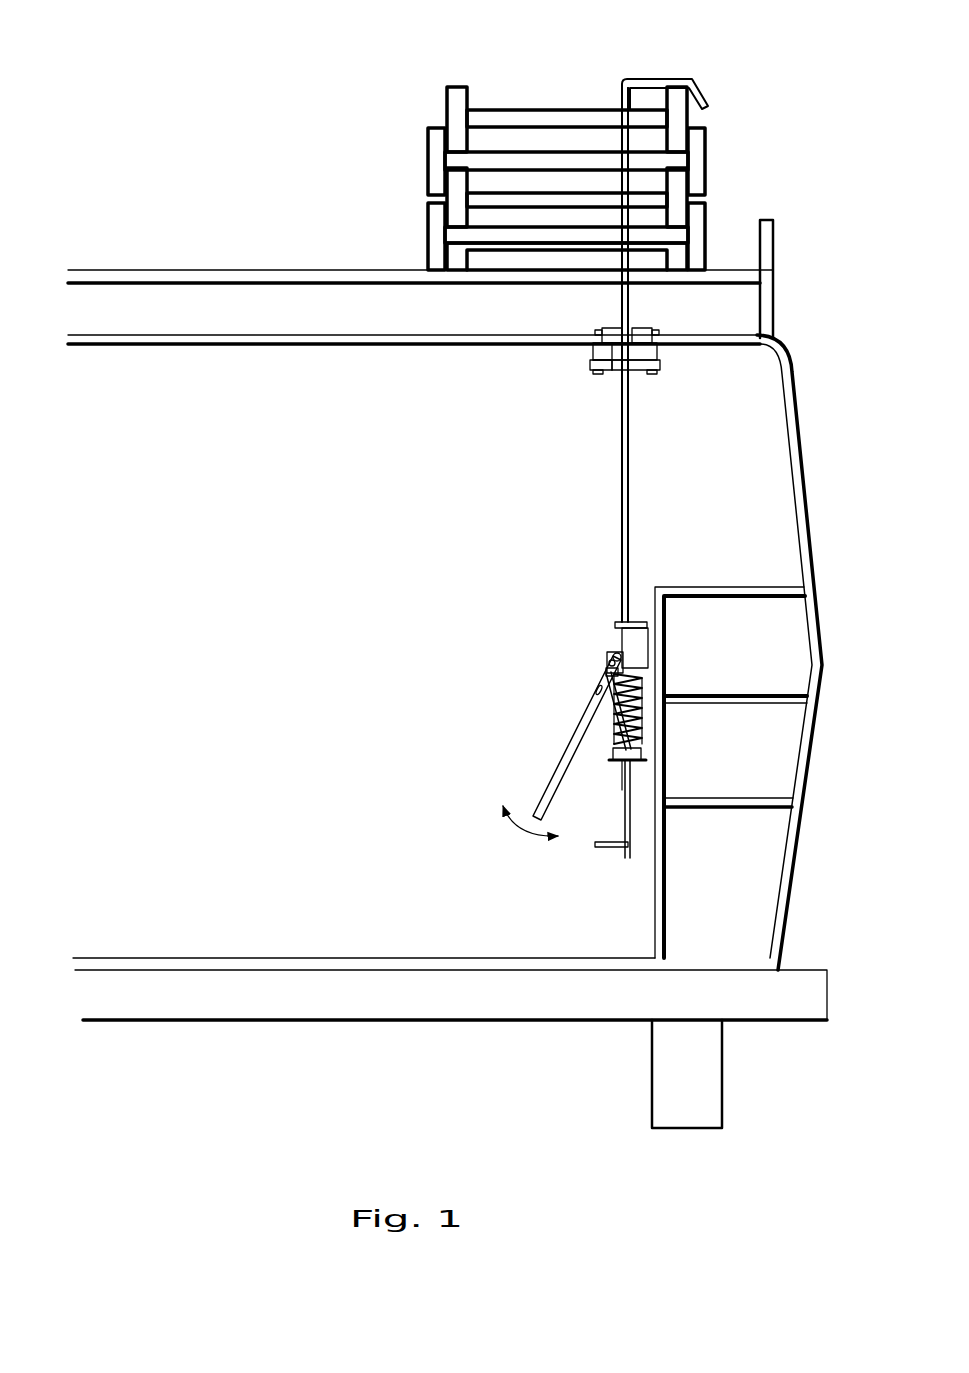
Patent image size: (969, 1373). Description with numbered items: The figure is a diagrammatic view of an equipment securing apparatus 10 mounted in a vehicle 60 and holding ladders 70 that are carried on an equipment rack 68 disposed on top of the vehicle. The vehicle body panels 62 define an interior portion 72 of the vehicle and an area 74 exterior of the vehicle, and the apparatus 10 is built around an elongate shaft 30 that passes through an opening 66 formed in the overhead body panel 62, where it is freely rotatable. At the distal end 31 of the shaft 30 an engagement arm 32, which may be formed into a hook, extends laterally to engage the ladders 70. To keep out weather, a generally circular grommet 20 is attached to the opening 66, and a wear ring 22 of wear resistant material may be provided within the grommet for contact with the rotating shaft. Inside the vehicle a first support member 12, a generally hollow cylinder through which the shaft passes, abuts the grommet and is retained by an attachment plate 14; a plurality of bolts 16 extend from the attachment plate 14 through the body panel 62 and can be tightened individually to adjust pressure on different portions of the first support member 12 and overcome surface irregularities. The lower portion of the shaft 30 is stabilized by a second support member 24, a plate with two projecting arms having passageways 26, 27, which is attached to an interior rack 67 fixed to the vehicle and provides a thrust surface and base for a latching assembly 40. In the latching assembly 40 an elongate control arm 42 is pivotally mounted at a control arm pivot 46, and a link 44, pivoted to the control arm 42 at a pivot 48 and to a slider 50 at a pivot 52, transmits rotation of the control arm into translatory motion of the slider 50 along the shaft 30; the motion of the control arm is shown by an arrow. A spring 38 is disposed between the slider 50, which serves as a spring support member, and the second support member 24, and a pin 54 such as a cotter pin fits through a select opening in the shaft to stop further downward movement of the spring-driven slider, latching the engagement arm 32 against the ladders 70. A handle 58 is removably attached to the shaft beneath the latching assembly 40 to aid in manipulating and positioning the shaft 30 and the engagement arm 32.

The equipment securing apparatus 10 is at (386, 590).
The first support member 12 is at (632, 372).
The attachment plate 14 is at (615, 375).
The bolts 16 is at (594, 375).
The grommet 20 is at (637, 332).
The wear ring 22 is at (622, 335).
The second support member 24 is at (642, 628).
The passageway 26 is at (620, 650).
The passageway 27 is at (614, 652).
The elongate shaft 30 is at (626, 542).
The distal end 31 is at (620, 97).
The engagement arm 32 is at (653, 80).
The spring 38 is at (640, 700).
The latching assembly 40 is at (460, 743).
The control arm 42 is at (555, 780).
The link 44 is at (640, 735).
The control arm pivot 46 is at (609, 660).
The pivot 48 is at (606, 672).
The slider 50 is at (642, 770).
The pivot 52 is at (612, 752).
The pin 54 is at (623, 780).
The handle 58 is at (610, 848).
The vehicle 60 is at (795, 430).
The vehicle body panel 62 is at (287, 338).
The opening 66 is at (638, 330).
The interior rack 67 is at (661, 650).
The equipment rack 68 is at (775, 242).
The ladders 70 is at (531, 110).
The interior portion 72 is at (356, 523).
The exterior area 74 is at (400, 47).